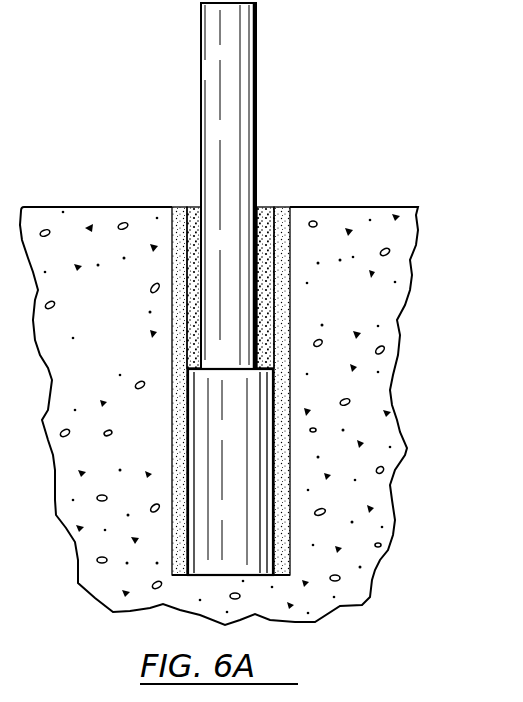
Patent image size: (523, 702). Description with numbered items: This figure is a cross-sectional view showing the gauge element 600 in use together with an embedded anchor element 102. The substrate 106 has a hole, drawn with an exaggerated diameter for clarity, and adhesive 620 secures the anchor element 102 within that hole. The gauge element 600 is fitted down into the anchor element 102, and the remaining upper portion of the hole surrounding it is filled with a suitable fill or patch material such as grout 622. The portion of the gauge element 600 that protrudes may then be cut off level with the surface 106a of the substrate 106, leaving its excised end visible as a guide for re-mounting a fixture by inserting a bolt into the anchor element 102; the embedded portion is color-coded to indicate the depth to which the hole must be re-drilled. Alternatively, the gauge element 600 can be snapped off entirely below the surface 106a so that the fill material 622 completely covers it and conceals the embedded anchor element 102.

The gauge element 600 is at (250, 68).
The fill material 622 is at (266, 212).
The adhesive 620 is at (285, 306).
The substrate 106 is at (124, 314).
The surface of the substrate 106a is at (100, 207).
The anchor element 102 is at (248, 497).